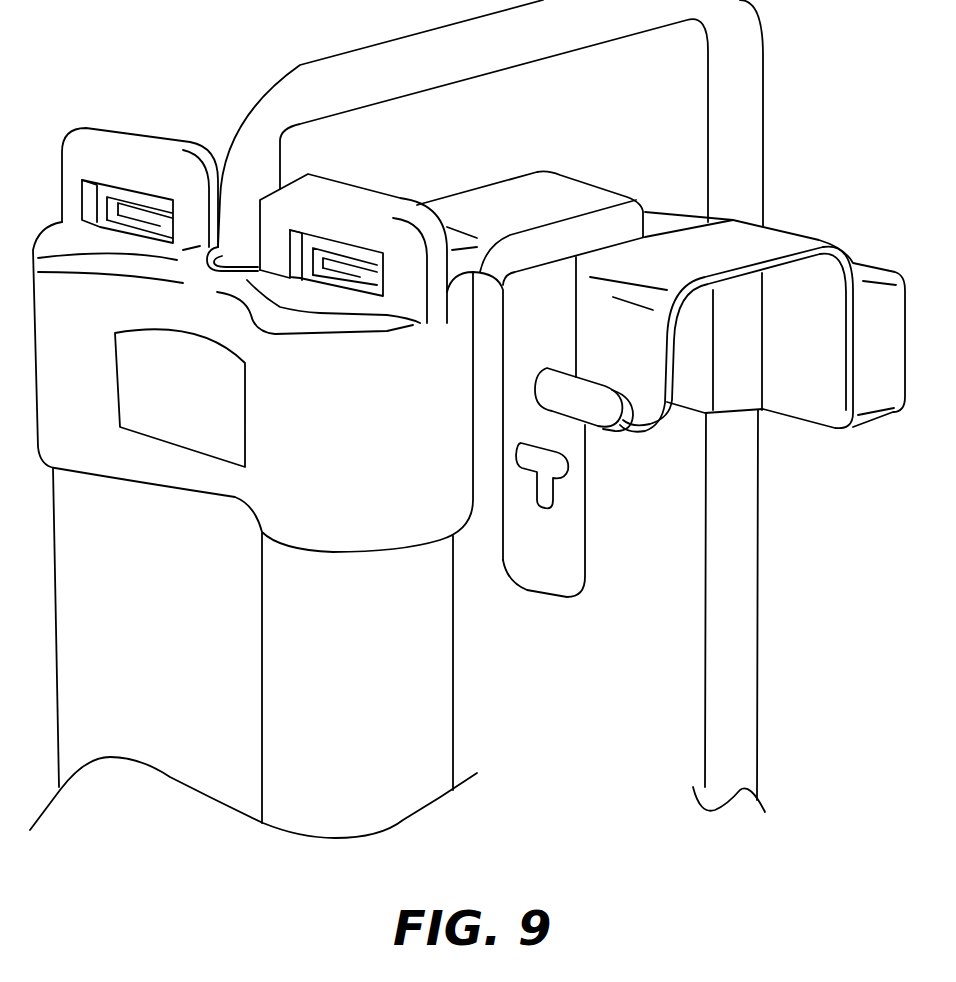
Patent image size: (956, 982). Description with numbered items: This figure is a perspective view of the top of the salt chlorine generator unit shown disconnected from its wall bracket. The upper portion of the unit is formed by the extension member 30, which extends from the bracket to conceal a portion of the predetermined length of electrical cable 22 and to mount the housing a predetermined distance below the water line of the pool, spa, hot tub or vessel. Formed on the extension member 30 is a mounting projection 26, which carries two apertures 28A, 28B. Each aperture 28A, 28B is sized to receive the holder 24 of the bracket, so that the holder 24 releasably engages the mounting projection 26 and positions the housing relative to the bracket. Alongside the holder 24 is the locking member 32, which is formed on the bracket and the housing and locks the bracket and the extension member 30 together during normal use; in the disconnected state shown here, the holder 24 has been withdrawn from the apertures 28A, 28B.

The electrical cable 22 is at (737, 475).
The holder 24 is at (637, 415).
The mounting projection 26 is at (98, 160).
The aperture 28A is at (133, 208).
The aperture 28B is at (343, 250).
The extension member 30 is at (423, 653).
The locking member 32 is at (547, 483).